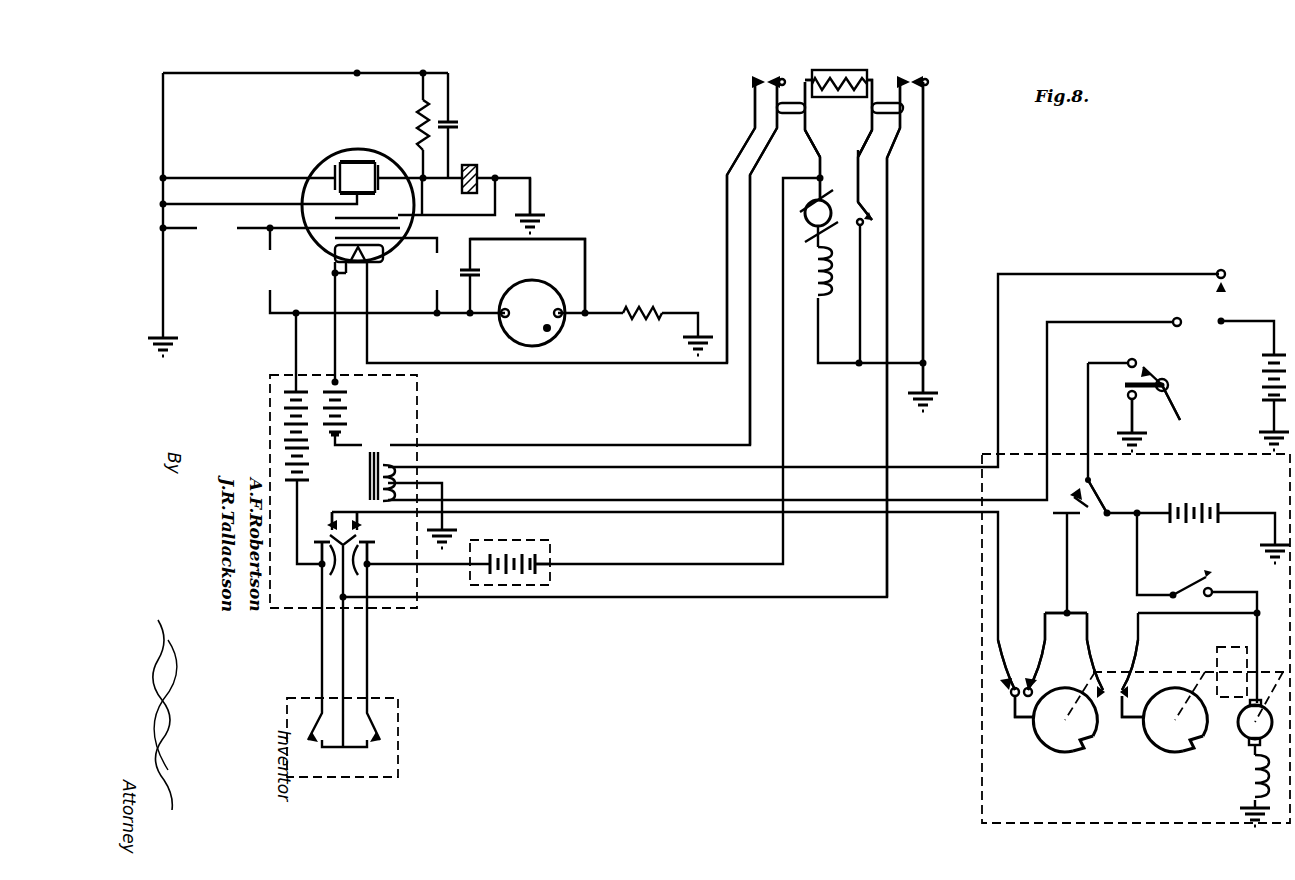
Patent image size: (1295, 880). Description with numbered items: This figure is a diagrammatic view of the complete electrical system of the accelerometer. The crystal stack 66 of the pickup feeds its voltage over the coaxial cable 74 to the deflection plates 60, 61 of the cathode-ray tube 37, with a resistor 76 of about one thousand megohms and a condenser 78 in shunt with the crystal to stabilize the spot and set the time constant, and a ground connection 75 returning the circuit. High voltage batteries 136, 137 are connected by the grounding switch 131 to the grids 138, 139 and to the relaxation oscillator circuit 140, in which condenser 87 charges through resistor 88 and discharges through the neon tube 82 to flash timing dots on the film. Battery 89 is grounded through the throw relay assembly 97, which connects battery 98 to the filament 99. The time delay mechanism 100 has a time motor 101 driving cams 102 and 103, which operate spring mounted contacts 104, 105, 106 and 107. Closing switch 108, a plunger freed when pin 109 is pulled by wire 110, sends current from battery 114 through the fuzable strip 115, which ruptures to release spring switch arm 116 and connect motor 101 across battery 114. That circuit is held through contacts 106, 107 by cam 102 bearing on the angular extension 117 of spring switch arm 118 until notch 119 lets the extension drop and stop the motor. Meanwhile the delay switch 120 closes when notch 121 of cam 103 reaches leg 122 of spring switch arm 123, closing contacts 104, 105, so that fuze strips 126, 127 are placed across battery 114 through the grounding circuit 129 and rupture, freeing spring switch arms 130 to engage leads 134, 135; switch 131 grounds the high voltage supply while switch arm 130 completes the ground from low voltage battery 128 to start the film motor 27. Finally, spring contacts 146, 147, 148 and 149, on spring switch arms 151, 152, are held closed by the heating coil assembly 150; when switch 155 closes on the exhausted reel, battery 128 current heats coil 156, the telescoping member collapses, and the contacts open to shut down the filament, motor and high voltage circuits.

The vacuum tube 37 is at (322, 172).
The deflection plate 61 is at (335, 183).
The deflection plate 60 is at (378, 185).
The cable 74 is at (425, 182).
The grid 138 is at (400, 230).
The grid 139 is at (335, 240).
The filament 99 is at (370, 256).
The resistor 76 is at (422, 136).
The condenser 78 is at (456, 124).
The crystal stack 66 is at (477, 168).
The ground connection 75 is at (520, 178).
The condenser 87 is at (474, 270).
The neon tube 82 is at (565, 322).
The resistor 88 is at (642, 318).
The relaxation oscillator circuit 140 is at (600, 292).
The high voltage battery 137 is at (306, 405).
The battery 98 is at (340, 394).
The high voltage battery 136 is at (285, 460).
The throw relay assembly 97 is at (365, 482).
The fuze strip 127 is at (330, 524).
The fuze strip 126 is at (362, 526).
The lead 134 is at (320, 562).
The lead 135 is at (368, 552).
The switch 131 is at (330, 575).
The spring switch arm 130 is at (358, 575).
The low voltage battery 128 is at (550, 556).
The spring contact 146 is at (758, 78).
The spring contact 147 is at (773, 78).
The heating coil assembly 150 is at (812, 62).
The heating coil 156 is at (850, 82).
The spring switch arm 151 is at (810, 130).
The spring switch arm 152 is at (862, 136).
The spring contact 148 is at (900, 78).
The spring contact 149 is at (924, 78).
The switch 155 is at (866, 204).
The motor 27 is at (826, 224).
The grounding circuit 129 is at (930, 392).
The switch 108 is at (1158, 372).
The pin 109 is at (1138, 388).
The wire 110 is at (1187, 402).
The battery 89 is at (1262, 400).
The fuzable strip 115 is at (1091, 490).
The spring switch arm 116 is at (1088, 510).
The battery 114 is at (1194, 500).
The contact 104 is at (1005, 640).
The contact 105 is at (1030, 675).
The contact 106 is at (1108, 675).
The spring switch arm 118 is at (1130, 680).
The angular extension 117 is at (1132, 710).
The spring switch arm 123 is at (1010, 692).
The delay switch 120 is at (1006, 708).
The leg 122 is at (1025, 720).
The delay cam 103 is at (1050, 750).
The notch 121 is at (1082, 742).
The contact 107 is at (1115, 706).
The cam 102 is at (1172, 752).
The notch 119 is at (1195, 748).
The motor 101 is at (1265, 736).
The time delay mechanism 100 is at (958, 630).